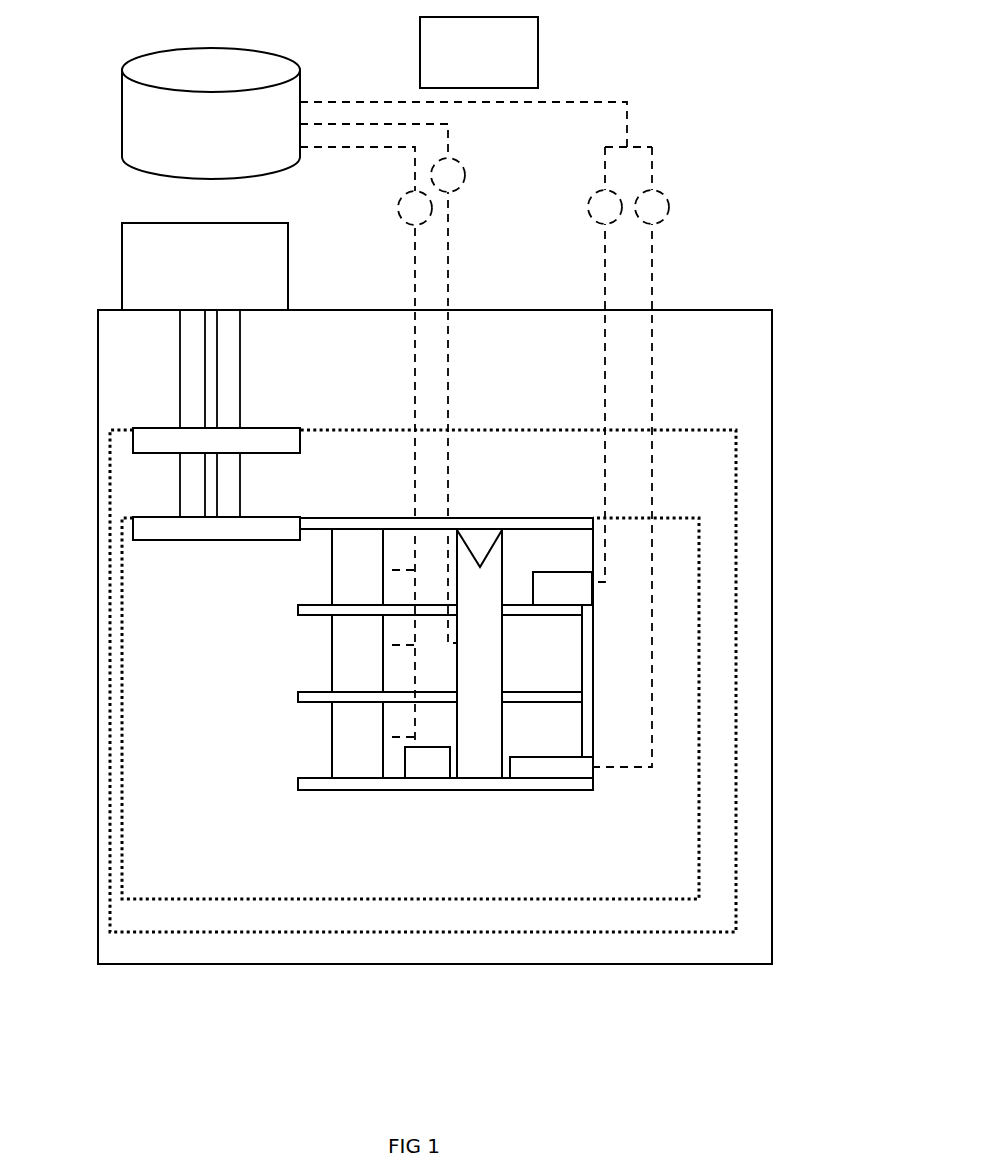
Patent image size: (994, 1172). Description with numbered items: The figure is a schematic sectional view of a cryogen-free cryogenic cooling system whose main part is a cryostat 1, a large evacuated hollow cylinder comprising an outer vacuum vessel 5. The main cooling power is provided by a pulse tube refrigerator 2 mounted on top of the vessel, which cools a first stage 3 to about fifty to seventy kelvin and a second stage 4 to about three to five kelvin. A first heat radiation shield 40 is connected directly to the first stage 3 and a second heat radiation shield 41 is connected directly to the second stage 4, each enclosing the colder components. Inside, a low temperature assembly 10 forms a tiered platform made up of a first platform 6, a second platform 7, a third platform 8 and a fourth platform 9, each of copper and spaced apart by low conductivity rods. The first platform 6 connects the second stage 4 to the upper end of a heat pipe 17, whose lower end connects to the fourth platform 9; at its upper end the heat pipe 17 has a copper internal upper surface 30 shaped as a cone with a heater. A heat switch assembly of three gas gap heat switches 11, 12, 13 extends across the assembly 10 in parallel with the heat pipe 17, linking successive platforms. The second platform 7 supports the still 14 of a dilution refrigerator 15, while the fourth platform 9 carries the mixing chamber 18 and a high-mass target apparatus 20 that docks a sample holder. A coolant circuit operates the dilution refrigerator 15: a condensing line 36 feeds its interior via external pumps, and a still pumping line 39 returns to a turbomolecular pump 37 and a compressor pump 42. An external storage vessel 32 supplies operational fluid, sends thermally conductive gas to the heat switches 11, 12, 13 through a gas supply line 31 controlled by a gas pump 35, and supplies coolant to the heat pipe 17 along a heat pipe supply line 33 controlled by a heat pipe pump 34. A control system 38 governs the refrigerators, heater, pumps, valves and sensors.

The cryostat 1 is at (700, 277).
The pulse tube refrigerator 2 is at (198, 281).
The first stage 3 is at (155, 427).
The second stage 4 is at (182, 535).
The outer vacuum vessel 5 is at (773, 337).
The first platform 6 is at (363, 516).
The second platform 7 is at (314, 604).
The third platform 8 is at (318, 691).
The fourth platform 9 is at (320, 777).
The low temperature assembly 10 is at (240, 654).
The first gas gap heat switch 11 is at (346, 581).
The second gas gap heat switch 12 is at (346, 666).
The third gas gap heat switch 13 is at (346, 753).
The still 14 is at (550, 601).
The dilution refrigerator 15 is at (596, 657).
The heat pipe 17 is at (468, 671).
The mixing chamber 18 is at (583, 779).
The target apparatus 20 is at (415, 776).
The internal upper surface 30 is at (479, 536).
The gas supply line 31 is at (412, 277).
The storage vessel 32 is at (190, 140).
The heat pipe supply line 33 is at (451, 386).
The heat pipe pump 34 is at (467, 181).
The gas pump 35 is at (400, 203).
The condensing line 36 is at (606, 100).
The turbomolecular pump 37 is at (590, 199).
The control system 38 is at (465, 64).
The still pumping line 39 is at (602, 297).
The first heat radiation shield 40 is at (108, 461).
The second heat radiation shield 41 is at (125, 713).
The compressor pump 42 is at (672, 201).